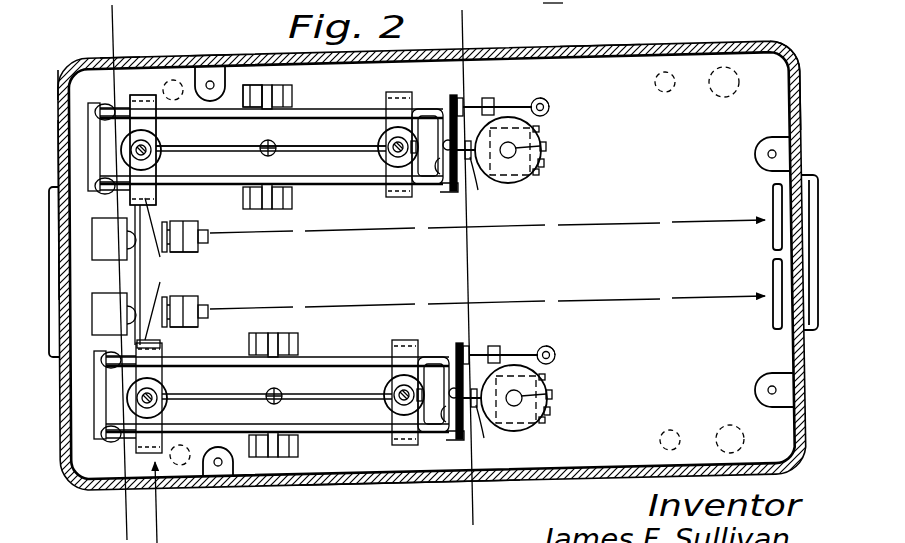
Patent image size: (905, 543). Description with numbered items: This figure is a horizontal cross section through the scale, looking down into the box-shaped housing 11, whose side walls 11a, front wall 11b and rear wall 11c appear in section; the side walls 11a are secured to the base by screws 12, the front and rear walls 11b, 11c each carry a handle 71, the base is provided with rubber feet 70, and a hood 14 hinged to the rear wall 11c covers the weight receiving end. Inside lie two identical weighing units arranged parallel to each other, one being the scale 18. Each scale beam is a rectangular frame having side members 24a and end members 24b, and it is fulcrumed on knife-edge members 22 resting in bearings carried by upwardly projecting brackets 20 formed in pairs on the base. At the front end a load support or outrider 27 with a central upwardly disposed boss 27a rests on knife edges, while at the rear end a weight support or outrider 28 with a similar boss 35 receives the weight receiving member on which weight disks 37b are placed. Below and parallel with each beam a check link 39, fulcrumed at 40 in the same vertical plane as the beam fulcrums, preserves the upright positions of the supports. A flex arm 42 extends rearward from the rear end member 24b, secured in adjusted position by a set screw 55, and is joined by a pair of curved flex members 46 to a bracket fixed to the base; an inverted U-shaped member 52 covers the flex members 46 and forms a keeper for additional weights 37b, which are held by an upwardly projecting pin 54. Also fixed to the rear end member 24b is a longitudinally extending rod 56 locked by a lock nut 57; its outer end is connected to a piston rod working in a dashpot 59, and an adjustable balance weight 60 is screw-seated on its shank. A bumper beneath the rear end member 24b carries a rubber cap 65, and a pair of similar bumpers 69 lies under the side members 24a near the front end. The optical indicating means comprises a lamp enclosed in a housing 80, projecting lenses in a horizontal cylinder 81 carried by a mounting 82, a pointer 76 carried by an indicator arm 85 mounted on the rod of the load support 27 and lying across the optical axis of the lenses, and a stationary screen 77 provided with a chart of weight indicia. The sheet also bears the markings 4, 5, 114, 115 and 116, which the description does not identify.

The section line 4- 4 is at (133, 50).
The section line 5- 5 is at (483, 42).
The housing 11 is at (619, 44).
The side walls 11a is at (578, 45).
The front wall 11b is at (60, 97).
The rear wall 11c is at (803, 68).
The screws 12 is at (207, 82).
The hood 14 is at (540, 6).
The weighing unit 18 is at (142, 90).
The brackets 20 is at (293, 99).
The knife-edge members 22 is at (287, 87).
The side members 24a is at (356, 110).
The end members 24b is at (449, 101).
The load support 27 is at (155, 170).
The boss 27a is at (161, 141).
The weight support 28 is at (383, 151).
The boss 35 is at (416, 148).
The weights 37b is at (544, 163).
The check link 39 is at (309, 147).
The fulcrum 40 is at (261, 155).
The flex arm 42 is at (499, 166).
The flex members 46 is at (516, 150).
The inverted U-shaped member 52 is at (536, 176).
The pin 54 is at (546, 146).
The set screw 55 is at (443, 150).
The rod 56 is at (538, 98).
The lock nut 57 is at (465, 98).
The dashpot 59 is at (549, 101).
The balance weight 60 is at (491, 97).
The rubber cap 65 is at (452, 193).
The bumpers 69 is at (103, 104).
The rubber feet 70 is at (675, 83).
The handle 71 is at (51, 192).
The pointer 76 is at (153, 271).
The screen 77 is at (773, 188).
The lamp housing 80 is at (107, 256).
The cylinder 81 is at (193, 222).
The mounting 82 is at (187, 254).
The indicator arm 85 is at (160, 344).
The casing portion 114 is at (118, 35).
The casing portion 115 is at (208, 28).
The casing portion 116 is at (55, 50).